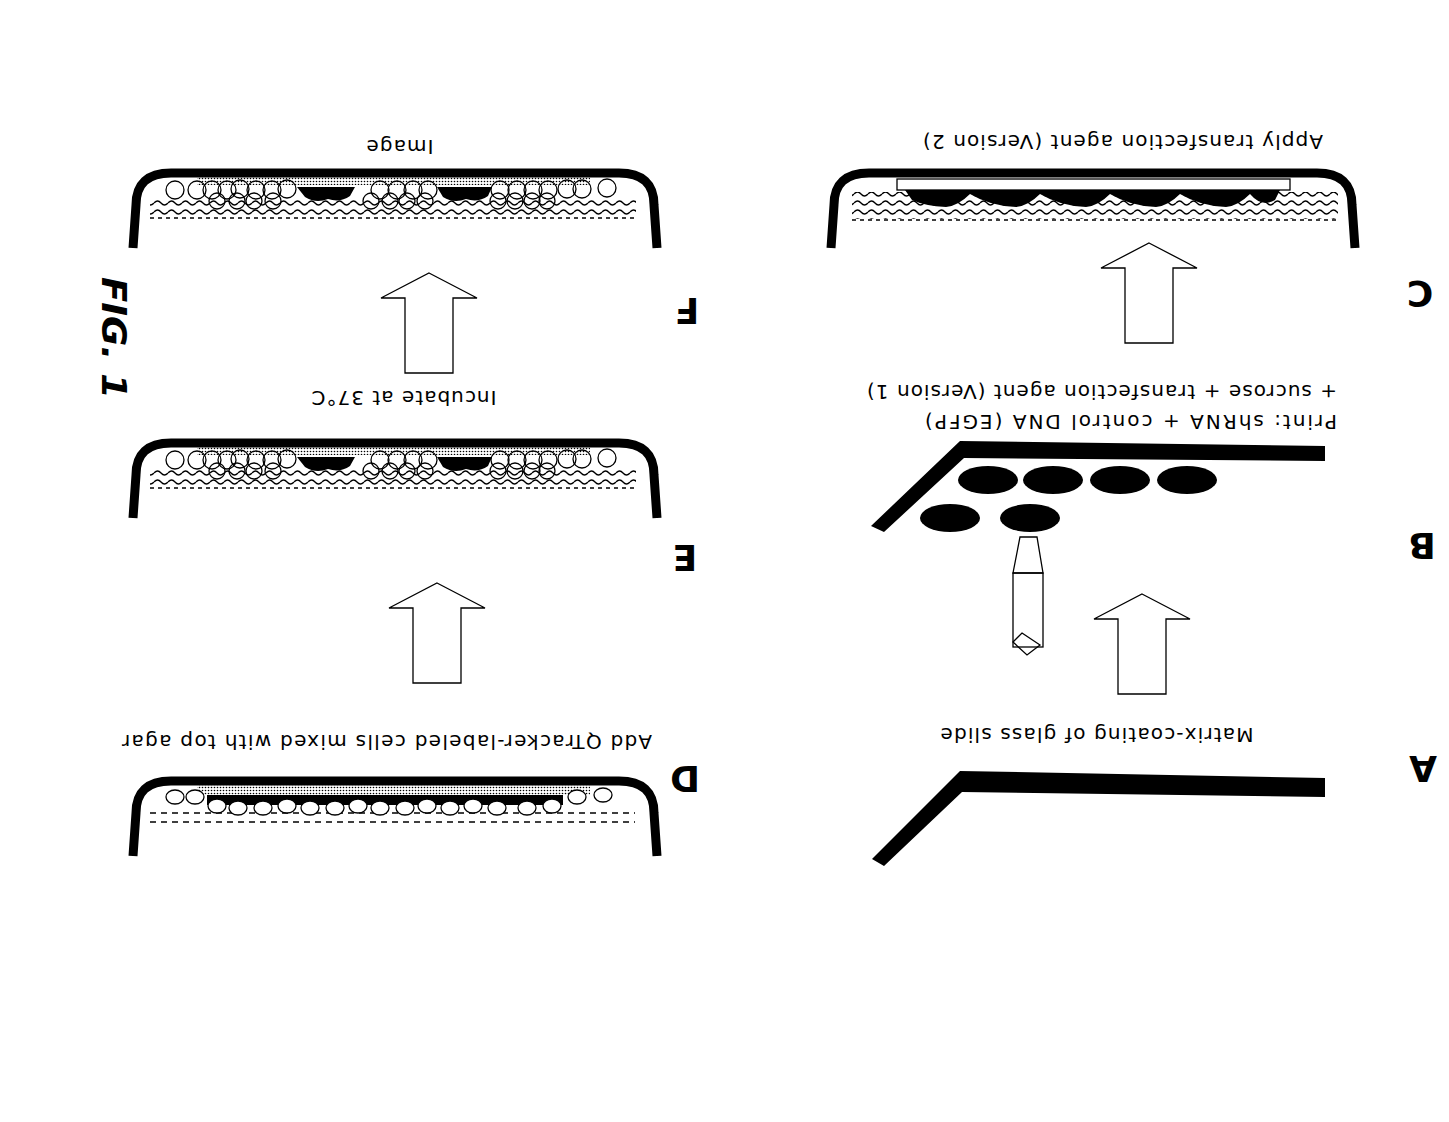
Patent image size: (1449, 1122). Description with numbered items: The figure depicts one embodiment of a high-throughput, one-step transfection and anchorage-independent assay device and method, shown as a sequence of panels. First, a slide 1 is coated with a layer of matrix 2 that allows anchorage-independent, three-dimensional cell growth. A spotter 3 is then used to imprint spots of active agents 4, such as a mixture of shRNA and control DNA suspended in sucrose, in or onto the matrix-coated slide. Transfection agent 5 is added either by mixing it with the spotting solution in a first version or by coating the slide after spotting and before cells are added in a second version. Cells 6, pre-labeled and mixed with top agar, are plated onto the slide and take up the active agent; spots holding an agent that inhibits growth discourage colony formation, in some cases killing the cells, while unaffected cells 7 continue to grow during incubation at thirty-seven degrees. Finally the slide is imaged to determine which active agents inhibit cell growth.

The slide 1 is at (1134, 856).
The layer of matrix 2 is at (1123, 858).
The spotter 3 is at (1013, 612).
The spots of active agents 4 is at (1195, 496).
The transfection agent 5 is at (1030, 218).
The cells 6 is at (378, 812).
The transfected growing cells 7 is at (447, 475).